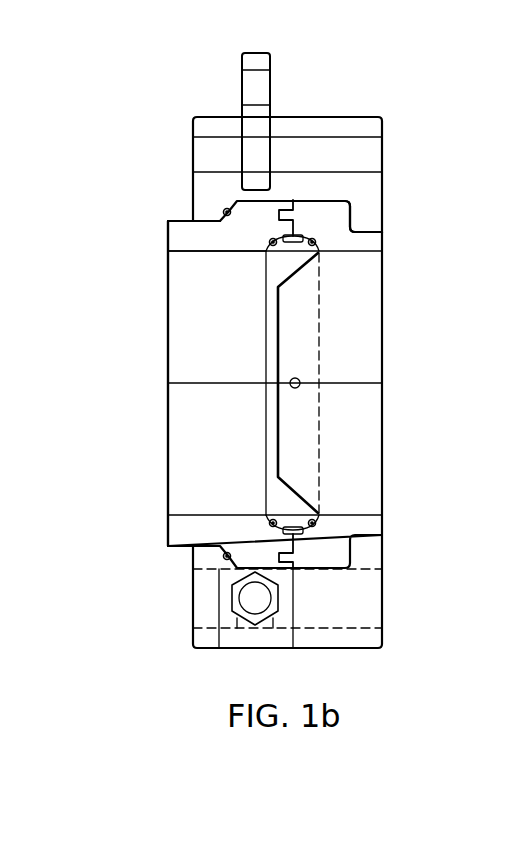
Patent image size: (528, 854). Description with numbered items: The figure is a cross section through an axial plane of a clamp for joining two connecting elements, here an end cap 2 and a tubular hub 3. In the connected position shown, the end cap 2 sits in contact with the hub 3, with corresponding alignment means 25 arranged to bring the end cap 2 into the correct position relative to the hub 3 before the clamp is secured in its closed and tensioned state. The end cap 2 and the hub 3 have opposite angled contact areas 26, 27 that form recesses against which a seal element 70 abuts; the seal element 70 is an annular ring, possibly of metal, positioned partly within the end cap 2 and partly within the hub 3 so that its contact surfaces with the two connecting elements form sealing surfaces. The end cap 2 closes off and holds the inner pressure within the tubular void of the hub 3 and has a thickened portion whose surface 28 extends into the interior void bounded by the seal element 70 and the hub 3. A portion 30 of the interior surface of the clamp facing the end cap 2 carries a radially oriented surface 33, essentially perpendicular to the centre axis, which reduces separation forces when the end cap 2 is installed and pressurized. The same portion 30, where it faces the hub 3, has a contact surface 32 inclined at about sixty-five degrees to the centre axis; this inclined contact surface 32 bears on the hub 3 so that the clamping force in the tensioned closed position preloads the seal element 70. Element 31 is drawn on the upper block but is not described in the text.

The end cap 2 is at (355, 333).
The hub 3 is at (177, 235).
The alignment means 25 is at (285, 205).
The angled contact area 26 is at (315, 244).
The angled contact area 27 is at (268, 244).
The surface 28 is at (277, 407).
The portion of the interior surface of the clamp 30 is at (238, 204).
The cover block 31 is at (327, 197).
The contact surface 32 is at (218, 218).
The radially oriented surface 33 is at (357, 213).
The seal element 70 is at (281, 517).